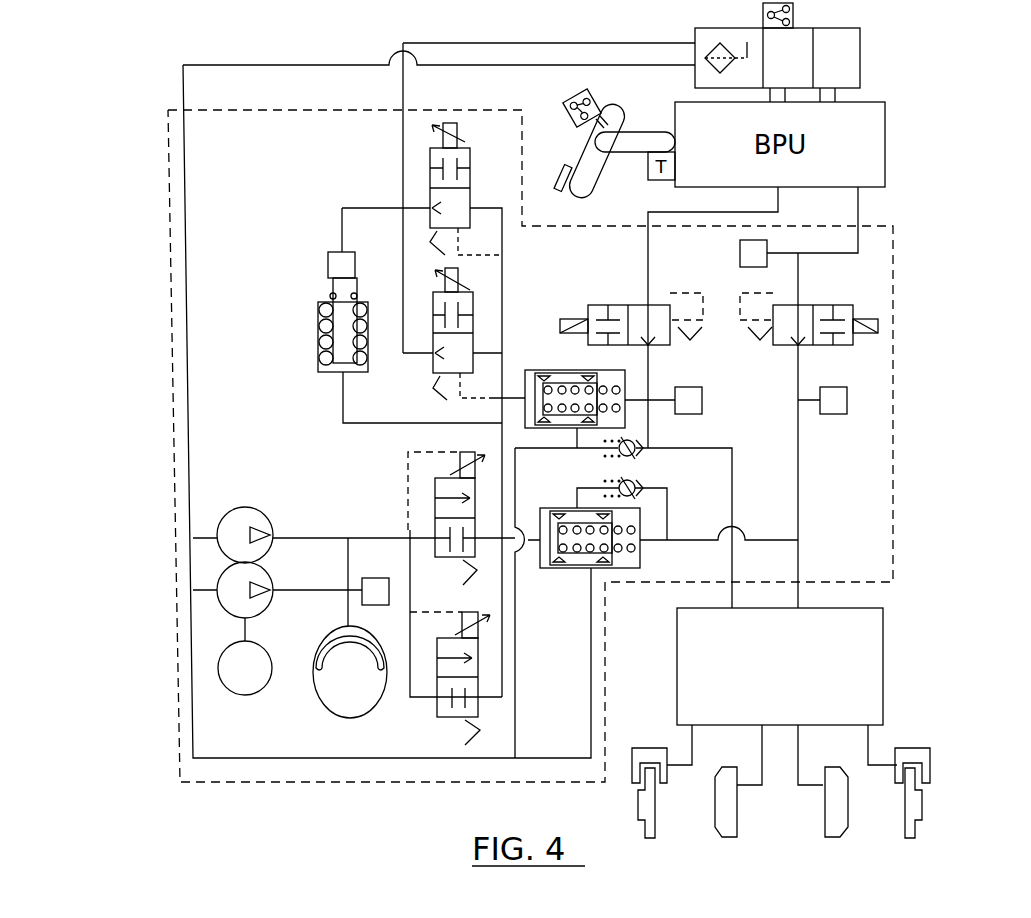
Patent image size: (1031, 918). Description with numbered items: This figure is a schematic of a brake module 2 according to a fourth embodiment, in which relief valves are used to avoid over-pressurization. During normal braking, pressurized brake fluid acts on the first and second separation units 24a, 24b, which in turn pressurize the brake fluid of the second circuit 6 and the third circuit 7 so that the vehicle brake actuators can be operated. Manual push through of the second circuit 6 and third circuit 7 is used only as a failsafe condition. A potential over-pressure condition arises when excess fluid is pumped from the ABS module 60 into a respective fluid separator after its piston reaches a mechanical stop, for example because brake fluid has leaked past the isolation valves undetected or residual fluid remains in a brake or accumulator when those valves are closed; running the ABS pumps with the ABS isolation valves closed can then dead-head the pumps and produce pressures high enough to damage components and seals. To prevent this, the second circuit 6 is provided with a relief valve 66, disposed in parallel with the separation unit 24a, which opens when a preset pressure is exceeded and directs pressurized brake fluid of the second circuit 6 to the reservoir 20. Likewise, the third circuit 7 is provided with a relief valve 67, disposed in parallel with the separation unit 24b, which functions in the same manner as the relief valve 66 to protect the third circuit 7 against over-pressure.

The brake module 2 is at (380, 785).
The second circuit 6 is at (735, 432).
The third circuit 7 is at (805, 535).
The reservoir 20 is at (862, 58).
The first separation unit 24a is at (553, 368).
The second separation unit 24b is at (572, 570).
The ABS module 60 is at (885, 667).
The relief valve 66 is at (640, 442).
The relief valve 67 is at (642, 494).